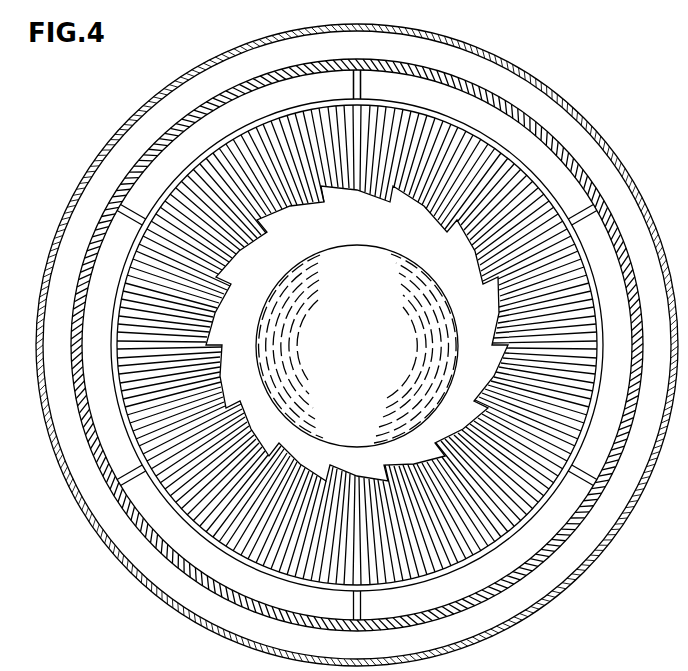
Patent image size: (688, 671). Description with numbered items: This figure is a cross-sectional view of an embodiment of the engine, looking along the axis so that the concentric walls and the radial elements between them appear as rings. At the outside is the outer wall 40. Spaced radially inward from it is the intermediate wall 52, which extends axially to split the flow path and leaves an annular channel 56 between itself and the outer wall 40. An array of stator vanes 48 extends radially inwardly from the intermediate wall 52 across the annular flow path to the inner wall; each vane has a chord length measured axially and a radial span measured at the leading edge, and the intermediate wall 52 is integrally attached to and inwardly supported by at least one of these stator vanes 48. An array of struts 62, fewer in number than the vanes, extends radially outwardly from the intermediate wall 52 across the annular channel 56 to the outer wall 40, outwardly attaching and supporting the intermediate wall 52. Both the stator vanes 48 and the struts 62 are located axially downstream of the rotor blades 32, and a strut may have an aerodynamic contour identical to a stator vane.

The rotor blades 32 is at (372, 228).
The outer wall 40 is at (292, 67).
The stator vanes 48 is at (505, 173).
The intermediate wall 52 is at (442, 114).
The annular channel 56 is at (110, 351).
The struts 62 is at (348, 77).